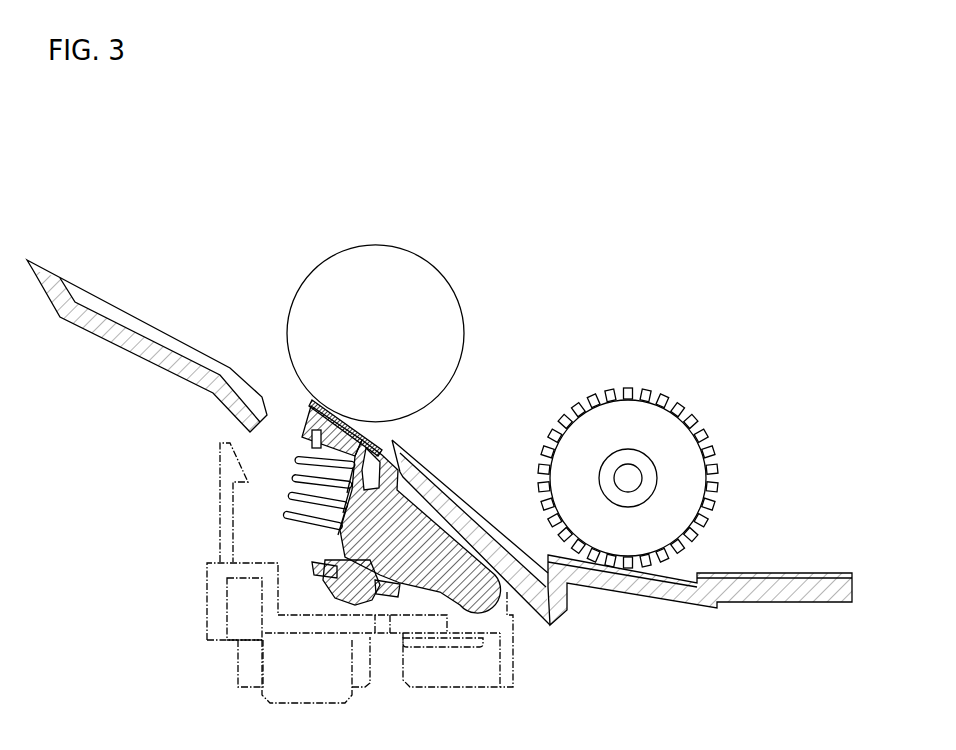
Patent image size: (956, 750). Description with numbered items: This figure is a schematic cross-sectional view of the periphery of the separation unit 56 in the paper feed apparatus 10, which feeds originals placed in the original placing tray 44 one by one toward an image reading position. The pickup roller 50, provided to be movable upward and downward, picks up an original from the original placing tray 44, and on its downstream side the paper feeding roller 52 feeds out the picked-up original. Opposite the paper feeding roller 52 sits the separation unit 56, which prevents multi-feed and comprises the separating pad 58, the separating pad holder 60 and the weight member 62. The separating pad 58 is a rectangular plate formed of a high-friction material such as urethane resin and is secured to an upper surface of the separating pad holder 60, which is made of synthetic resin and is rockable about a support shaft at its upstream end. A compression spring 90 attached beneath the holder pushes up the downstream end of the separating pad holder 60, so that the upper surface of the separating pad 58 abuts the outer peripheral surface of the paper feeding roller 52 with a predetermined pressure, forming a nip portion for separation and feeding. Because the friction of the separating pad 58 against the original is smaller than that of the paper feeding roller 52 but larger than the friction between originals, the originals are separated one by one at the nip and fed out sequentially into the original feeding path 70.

The paper feed apparatus 10 is at (234, 172).
The original placing tray 44 is at (782, 590).
The pickup roller 50 is at (665, 432).
The paper feeding roller 52 is at (425, 313).
The separation unit 56 is at (283, 450).
The separating pad 58 is at (362, 432).
The separating pad holder 60 is at (433, 530).
The weight member 62 is at (312, 564).
The original feeding path 70 is at (163, 316).
The compression spring 90 is at (295, 502).